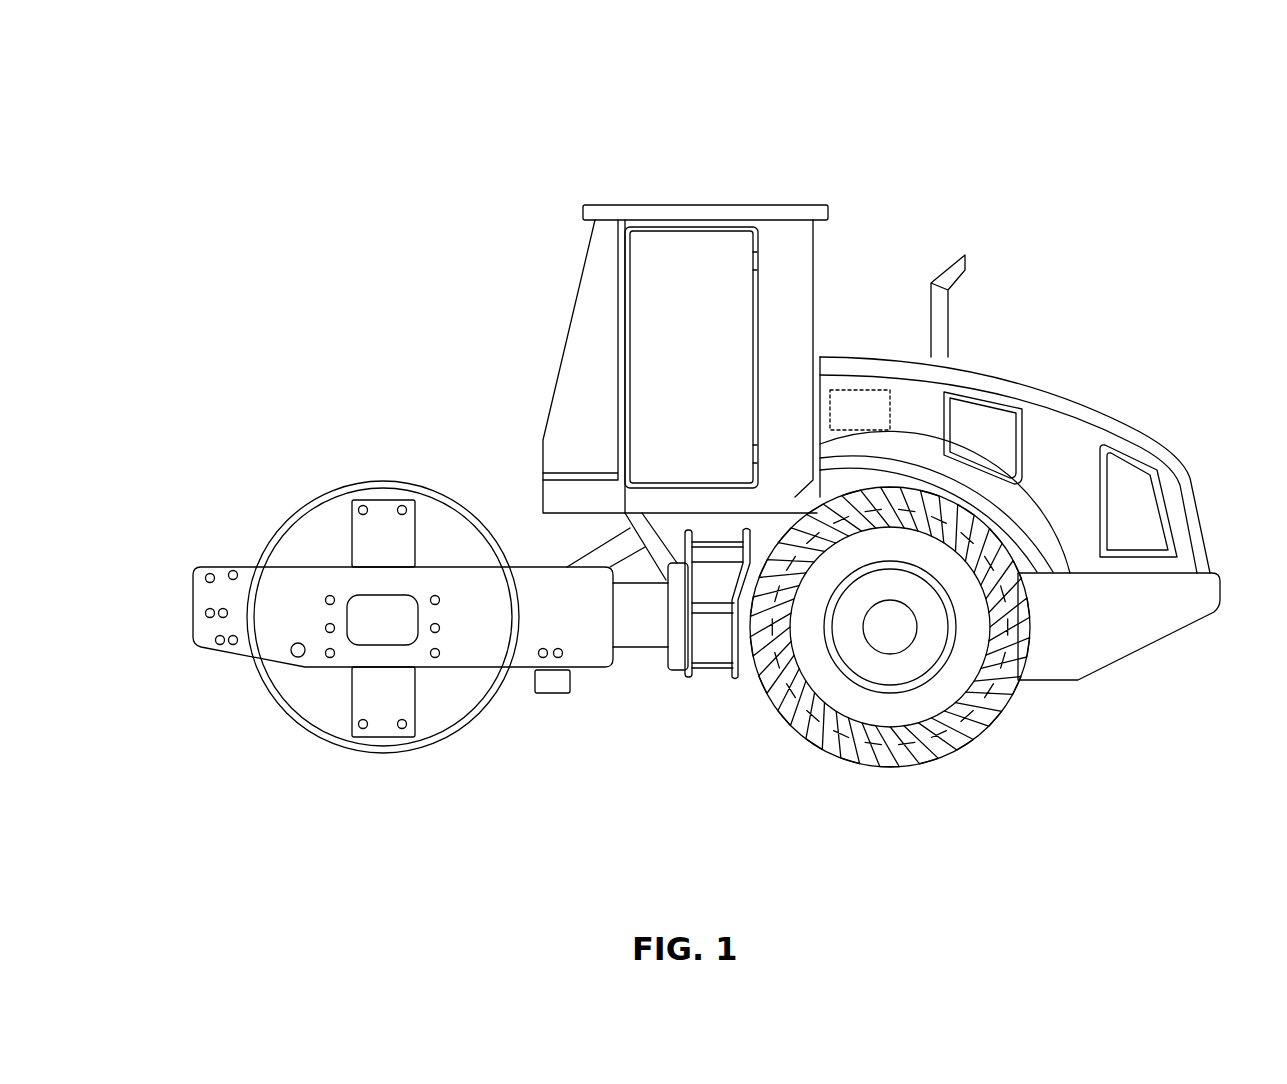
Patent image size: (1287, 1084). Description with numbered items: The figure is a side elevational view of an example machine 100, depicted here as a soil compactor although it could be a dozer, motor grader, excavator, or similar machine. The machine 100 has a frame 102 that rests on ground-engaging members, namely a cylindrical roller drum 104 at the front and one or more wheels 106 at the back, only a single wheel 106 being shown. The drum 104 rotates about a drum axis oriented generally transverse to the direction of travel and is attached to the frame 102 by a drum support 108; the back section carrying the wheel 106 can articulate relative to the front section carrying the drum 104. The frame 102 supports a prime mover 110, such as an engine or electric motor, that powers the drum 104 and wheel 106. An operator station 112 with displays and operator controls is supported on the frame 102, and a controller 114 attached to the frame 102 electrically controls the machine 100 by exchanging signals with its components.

The machine 100 is at (188, 65).
The frame 102 is at (1020, 467).
The cylindrical roller drum 104 is at (442, 695).
The wheel 106 is at (903, 708).
The drum support 108 is at (265, 632).
The prime mover 110 is at (1000, 443).
The operator station 112 is at (707, 203).
The controller 114 is at (877, 421).